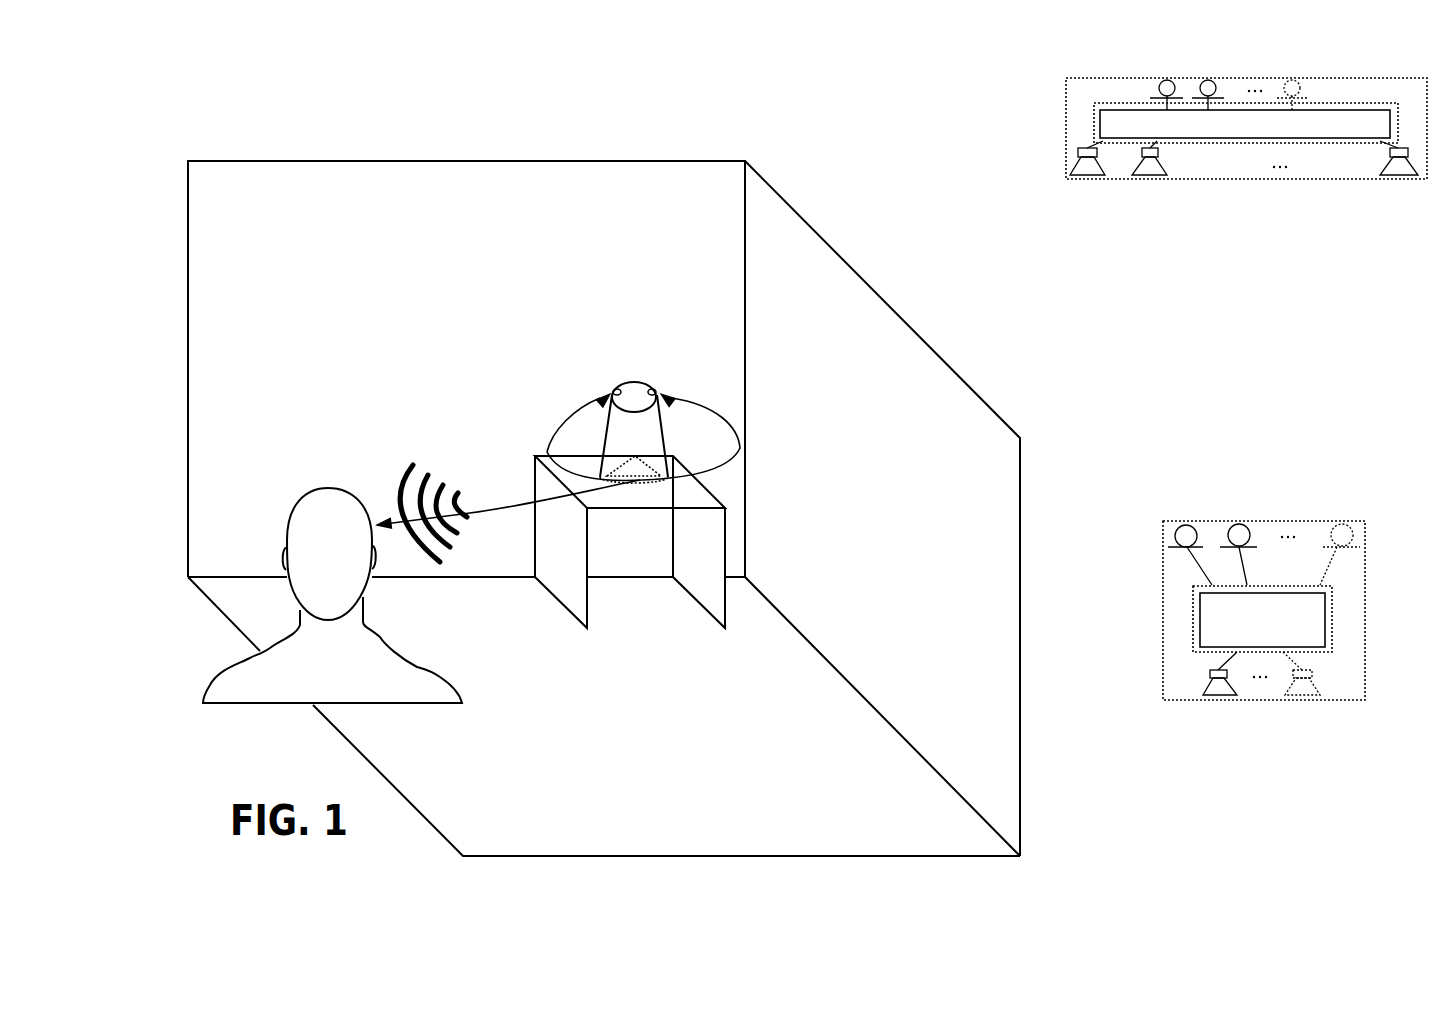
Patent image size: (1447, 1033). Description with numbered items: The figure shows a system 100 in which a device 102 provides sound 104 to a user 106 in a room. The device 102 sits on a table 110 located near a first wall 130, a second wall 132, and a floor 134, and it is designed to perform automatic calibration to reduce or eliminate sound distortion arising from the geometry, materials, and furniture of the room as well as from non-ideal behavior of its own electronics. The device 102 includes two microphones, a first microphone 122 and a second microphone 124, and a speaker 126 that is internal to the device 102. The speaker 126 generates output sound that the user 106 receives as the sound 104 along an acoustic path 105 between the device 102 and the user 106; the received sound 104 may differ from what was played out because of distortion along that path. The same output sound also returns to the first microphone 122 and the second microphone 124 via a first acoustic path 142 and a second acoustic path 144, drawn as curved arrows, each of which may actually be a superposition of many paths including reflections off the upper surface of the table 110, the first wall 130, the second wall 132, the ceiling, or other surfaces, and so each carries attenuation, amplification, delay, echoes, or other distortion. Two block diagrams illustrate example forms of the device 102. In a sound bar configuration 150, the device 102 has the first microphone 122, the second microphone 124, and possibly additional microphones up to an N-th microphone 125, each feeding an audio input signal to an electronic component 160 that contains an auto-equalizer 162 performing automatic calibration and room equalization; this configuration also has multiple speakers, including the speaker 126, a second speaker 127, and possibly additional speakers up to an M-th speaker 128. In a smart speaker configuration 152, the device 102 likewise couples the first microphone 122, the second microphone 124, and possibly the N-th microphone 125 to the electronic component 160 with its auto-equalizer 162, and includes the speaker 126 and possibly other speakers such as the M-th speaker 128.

The system 100 is at (157, 196).
The device 102 is at (618, 381).
The sound 104 is at (442, 460).
The acoustic path 105 is at (481, 514).
The user 106 is at (387, 706).
The table 110 is at (587, 604).
The first microphone 122 is at (613, 392).
The second microphone 124 is at (660, 391).
The N-th microphone 125 is at (1302, 82).
The speaker 126 is at (648, 462).
The second speaker 127 is at (1148, 175).
The M-th speaker 128 is at (1393, 175).
The first wall 130 is at (486, 223).
The second wall 132 is at (968, 468).
The floor 134 is at (710, 815).
The first acoustic path 142 is at (580, 420).
The second acoustic path 144 is at (672, 402).
The sound bar configuration 150 is at (1247, 244).
The smart speaker configuration 152 is at (1220, 482).
The electronic component 160 is at (1094, 123).
The auto-equalizer 162 is at (1309, 134).